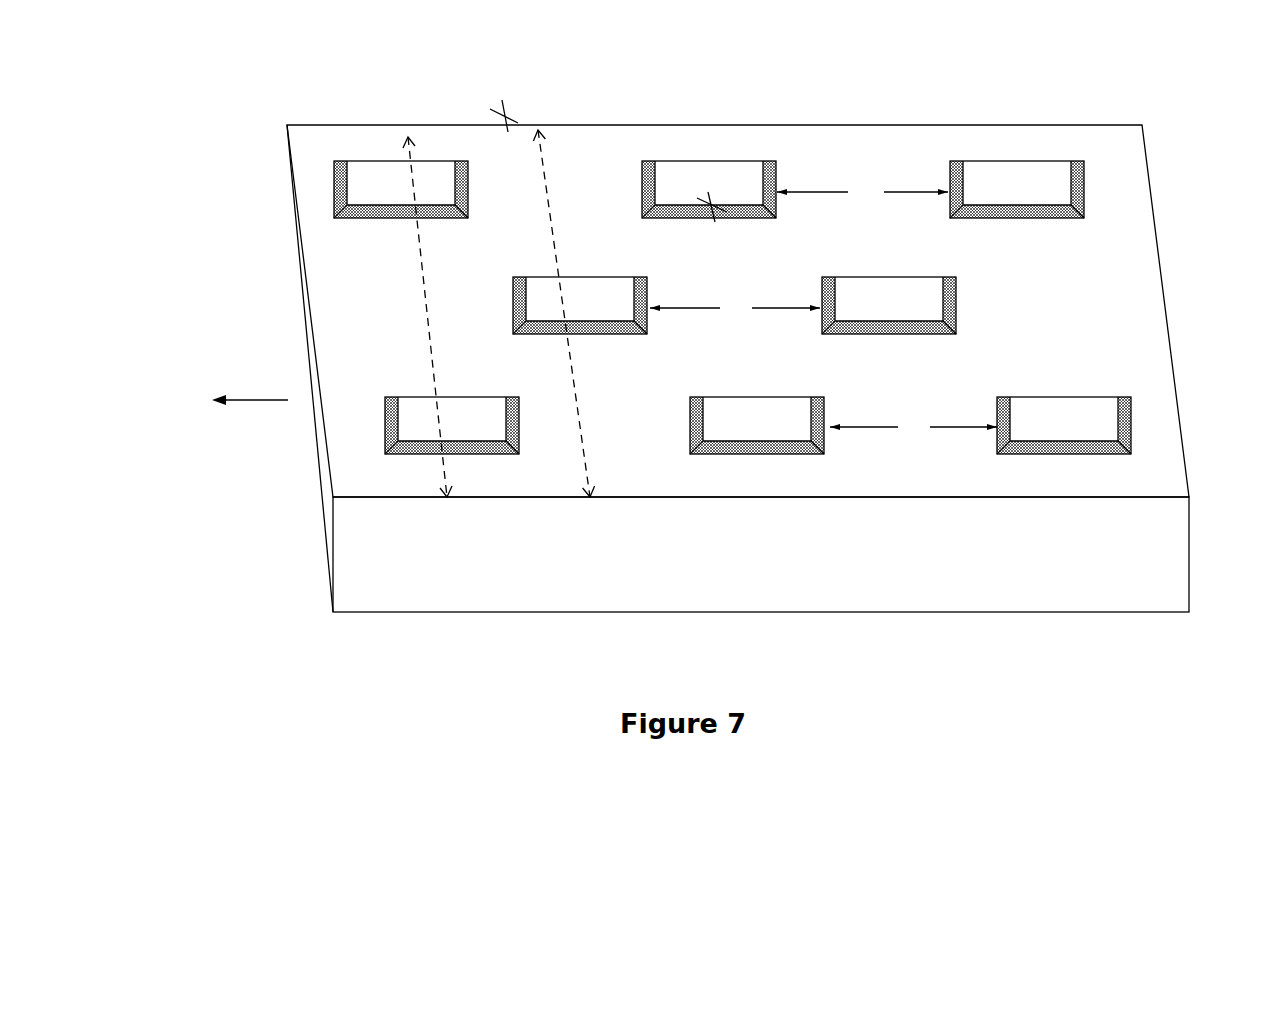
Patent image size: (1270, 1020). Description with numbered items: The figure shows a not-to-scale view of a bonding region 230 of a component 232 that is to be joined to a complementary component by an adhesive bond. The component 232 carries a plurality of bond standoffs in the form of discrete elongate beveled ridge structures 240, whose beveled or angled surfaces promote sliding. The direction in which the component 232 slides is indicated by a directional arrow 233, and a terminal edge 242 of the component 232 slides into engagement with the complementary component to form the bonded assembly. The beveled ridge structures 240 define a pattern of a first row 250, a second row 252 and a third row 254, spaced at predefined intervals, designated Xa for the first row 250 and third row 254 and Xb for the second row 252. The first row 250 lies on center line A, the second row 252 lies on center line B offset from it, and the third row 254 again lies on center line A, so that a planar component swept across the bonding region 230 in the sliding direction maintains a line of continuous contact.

The bonding region 230 is at (275, 95).
The component 232 is at (1150, 578).
The directional arrow 233 is at (263, 400).
The beveled ridge structures 240 is at (950, 170).
The terminal edge 242 is at (323, 487).
The first row 250 is at (826, 429).
The second row 252 is at (886, 307).
The third row 254 is at (787, 151).